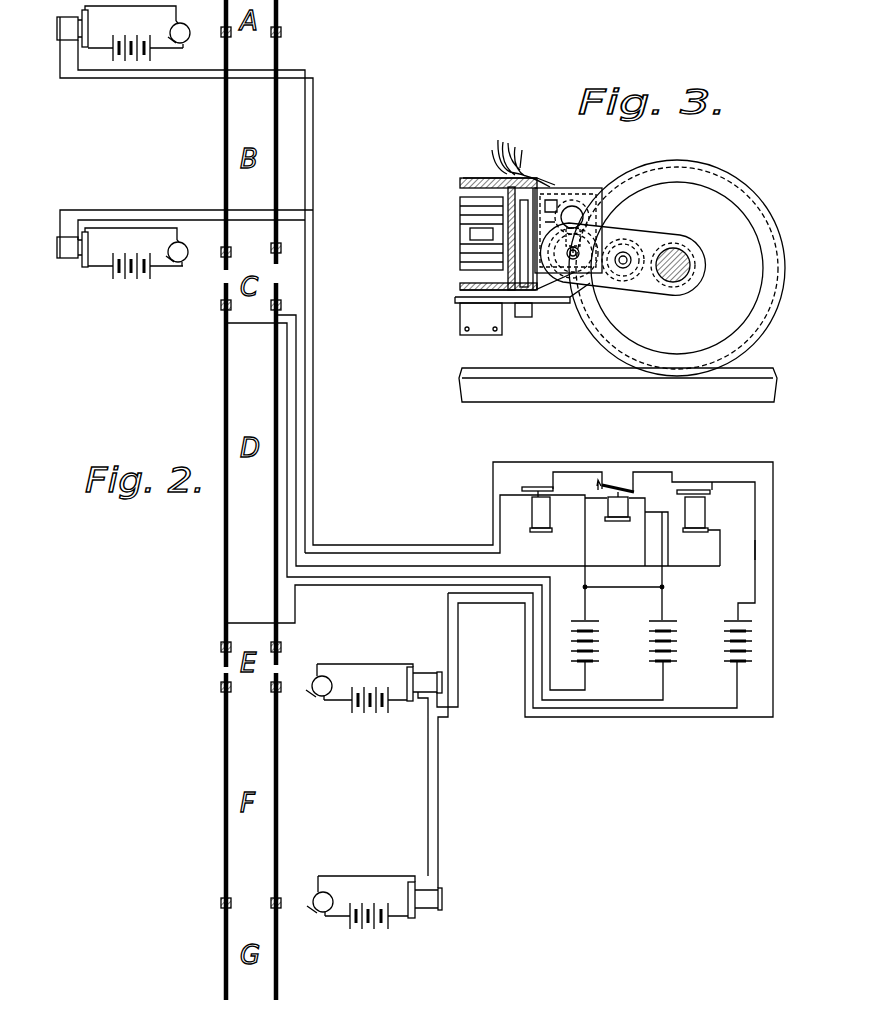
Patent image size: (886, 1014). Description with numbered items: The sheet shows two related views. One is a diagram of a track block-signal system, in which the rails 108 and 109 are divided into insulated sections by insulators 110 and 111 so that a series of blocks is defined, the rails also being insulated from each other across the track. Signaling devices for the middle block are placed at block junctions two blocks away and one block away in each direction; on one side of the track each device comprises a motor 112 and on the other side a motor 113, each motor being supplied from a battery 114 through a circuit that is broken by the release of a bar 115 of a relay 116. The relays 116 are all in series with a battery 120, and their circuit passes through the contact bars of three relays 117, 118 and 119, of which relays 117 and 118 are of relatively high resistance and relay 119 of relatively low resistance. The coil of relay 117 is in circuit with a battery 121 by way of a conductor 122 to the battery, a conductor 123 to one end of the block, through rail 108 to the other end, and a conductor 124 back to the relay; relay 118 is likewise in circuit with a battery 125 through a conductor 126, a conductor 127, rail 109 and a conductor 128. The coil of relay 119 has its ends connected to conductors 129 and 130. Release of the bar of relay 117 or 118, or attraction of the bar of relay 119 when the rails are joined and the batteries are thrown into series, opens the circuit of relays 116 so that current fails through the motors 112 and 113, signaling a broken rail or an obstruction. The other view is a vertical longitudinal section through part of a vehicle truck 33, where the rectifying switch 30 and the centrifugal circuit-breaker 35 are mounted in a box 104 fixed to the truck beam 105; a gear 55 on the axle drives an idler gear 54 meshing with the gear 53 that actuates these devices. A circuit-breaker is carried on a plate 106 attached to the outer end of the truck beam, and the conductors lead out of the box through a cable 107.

In FIG. 3, the rectifying switch 30 is at (560, 186).
In FIG. 3, the truck 33 is at (458, 222).
In FIG. 3, the centrifugal circuit-breaker 35 is at (590, 217).
In FIG. 3, the gear 53 is at (566, 282).
In FIG. 3, the idler gear 54 is at (620, 283).
In FIG. 3, the gear on the axle 55 is at (687, 282).
In FIG. 3, the box 104 is at (585, 187).
In FIG. 3, the truck beam 105 is at (497, 172).
In FIG. 3, the plate 106 is at (462, 320).
In FIG. 3, the cable 107 is at (525, 180).
In FIG. 2, the rail 108 is at (223, 577).
In FIG. 2, the rail 109 is at (274, 545).
In FIG. 2, the insulator 110 is at (232, 34).
In FIG. 2, the insulator 111 is at (281, 34).
In FIG. 2, the motor 112 is at (184, 37).
In FIG. 2, the motor 113 is at (323, 684).
In FIG. 2, the battery 114 is at (135, 54).
In FIG. 2, the bar 115 is at (90, 30).
In FIG. 2, the relay 116 is at (68, 42).
In FIG. 2, the relay 117 is at (532, 508).
In FIG. 2, the relay 118 is at (700, 510).
In FIG. 2, the relay 119 is at (620, 512).
In FIG. 2, the battery 120 is at (732, 665).
In FIG. 2, the battery 121 is at (593, 665).
In FIG. 2, the conductor 122 is at (584, 553).
In FIG. 2, the conductor 123 is at (240, 623).
In FIG. 2, the conductor 124 is at (246, 325).
In FIG. 2, the battery 125 is at (652, 665).
In FIG. 2, the conductor 126 is at (742, 555).
In FIG. 2, the conductor 127 is at (356, 586).
In FIG. 2, the conductor 128 is at (288, 362).
In FIG. 2, the conductor 129 is at (640, 520).
In FIG. 2, the conductor 130 is at (667, 548).